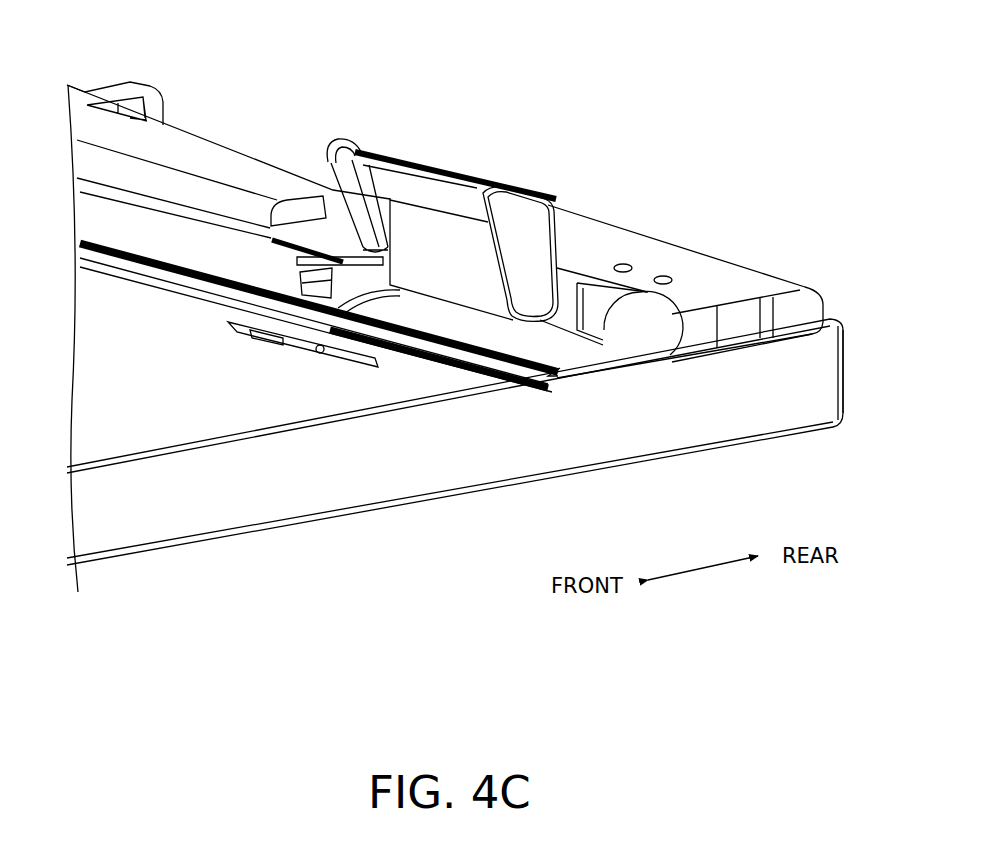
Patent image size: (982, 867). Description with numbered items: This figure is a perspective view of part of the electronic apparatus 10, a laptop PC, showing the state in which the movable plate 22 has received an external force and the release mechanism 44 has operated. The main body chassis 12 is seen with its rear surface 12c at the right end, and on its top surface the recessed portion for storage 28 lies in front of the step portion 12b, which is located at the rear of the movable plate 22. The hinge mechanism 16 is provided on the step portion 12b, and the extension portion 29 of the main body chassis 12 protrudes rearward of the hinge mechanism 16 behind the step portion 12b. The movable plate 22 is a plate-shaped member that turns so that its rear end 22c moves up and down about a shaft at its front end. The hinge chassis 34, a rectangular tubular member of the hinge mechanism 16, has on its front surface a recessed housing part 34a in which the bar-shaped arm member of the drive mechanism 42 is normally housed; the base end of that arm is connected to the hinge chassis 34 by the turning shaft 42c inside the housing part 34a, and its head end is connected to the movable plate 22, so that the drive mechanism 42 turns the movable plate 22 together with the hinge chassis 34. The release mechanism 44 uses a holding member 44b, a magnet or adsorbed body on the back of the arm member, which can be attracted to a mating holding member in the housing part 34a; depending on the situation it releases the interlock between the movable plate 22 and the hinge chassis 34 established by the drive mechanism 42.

The electronic apparatus 10 is at (57, 86).
The main body chassis 12 is at (167, 557).
The step portion 12b is at (577, 360).
The rear surface 12c is at (845, 374).
The hinge mechanism 16 is at (572, 239).
The movable plate 22 is at (128, 288).
The rear end 22c is at (128, 248).
The recessed portion for storage 28 is at (227, 400).
The extension portion 29 is at (713, 277).
The hinge chassis 34 is at (485, 272).
The housing part 34a is at (334, 148).
The drive mechanism 42 is at (290, 277).
The turning shaft 42c is at (400, 172).
The release mechanism 44 is at (334, 137).
The holding member 44b is at (323, 178).